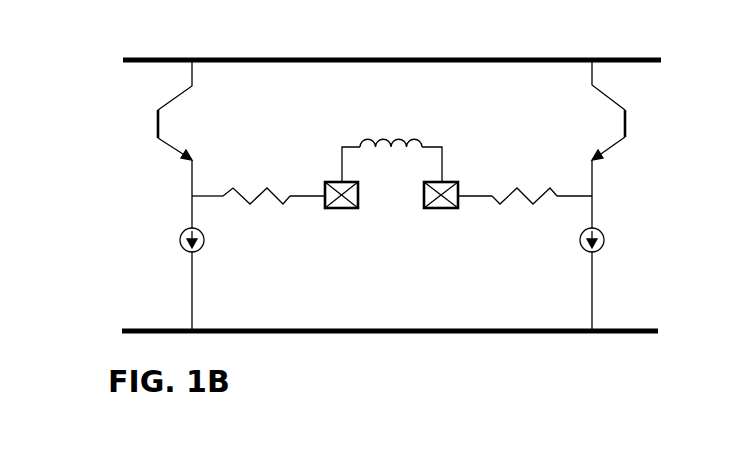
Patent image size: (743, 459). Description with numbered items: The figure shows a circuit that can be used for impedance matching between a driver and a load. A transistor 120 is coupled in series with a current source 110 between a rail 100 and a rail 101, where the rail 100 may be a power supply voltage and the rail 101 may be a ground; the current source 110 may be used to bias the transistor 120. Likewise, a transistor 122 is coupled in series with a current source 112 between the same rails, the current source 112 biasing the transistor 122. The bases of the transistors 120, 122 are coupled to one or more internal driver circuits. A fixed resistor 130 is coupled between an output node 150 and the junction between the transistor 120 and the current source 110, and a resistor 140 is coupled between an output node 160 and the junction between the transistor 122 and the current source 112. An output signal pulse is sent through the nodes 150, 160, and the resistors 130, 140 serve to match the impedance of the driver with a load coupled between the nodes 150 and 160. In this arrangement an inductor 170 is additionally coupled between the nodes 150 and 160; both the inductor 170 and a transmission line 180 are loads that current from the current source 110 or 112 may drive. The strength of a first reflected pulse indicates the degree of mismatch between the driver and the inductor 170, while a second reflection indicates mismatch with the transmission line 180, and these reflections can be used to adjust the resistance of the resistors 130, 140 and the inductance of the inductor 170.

The rail 100 is at (410, 58).
The rail 101 is at (477, 333).
The current source 110 is at (181, 236).
The current source 112 is at (604, 235).
The transistor 120 is at (158, 124).
The transistor 122 is at (625, 124).
The fixed resistor 130 is at (265, 200).
The resistor 140 is at (522, 204).
The output node 150 is at (333, 182).
The output node 160 is at (450, 182).
The inductor 170 is at (392, 142).
The transmission line 180 is at (338, 181).